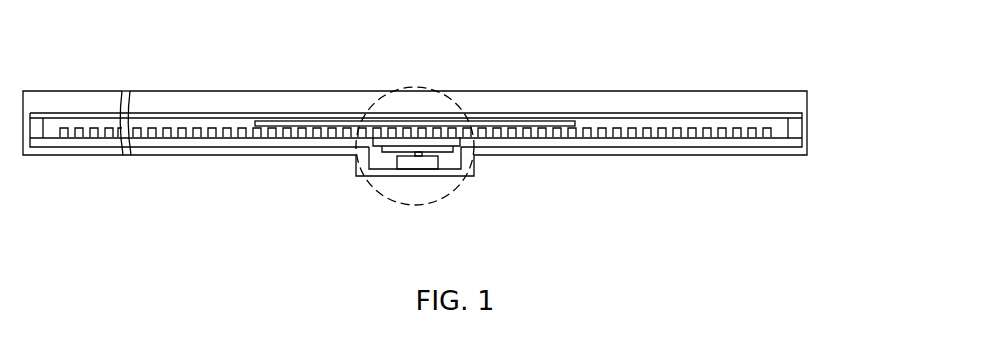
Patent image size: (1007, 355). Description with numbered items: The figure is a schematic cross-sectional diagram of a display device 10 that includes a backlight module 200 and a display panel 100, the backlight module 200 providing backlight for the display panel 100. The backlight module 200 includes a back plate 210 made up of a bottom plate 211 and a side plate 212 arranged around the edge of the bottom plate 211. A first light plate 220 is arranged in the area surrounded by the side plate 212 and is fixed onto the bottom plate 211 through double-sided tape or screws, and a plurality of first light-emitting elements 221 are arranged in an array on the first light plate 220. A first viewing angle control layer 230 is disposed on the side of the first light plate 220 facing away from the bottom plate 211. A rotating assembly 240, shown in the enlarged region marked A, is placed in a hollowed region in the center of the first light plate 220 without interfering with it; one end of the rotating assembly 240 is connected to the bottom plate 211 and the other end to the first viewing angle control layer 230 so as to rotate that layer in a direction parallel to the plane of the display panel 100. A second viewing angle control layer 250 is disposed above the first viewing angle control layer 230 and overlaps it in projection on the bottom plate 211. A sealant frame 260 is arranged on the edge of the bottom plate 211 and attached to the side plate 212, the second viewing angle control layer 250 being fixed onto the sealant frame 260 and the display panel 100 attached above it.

The display device 10 is at (77, 57).
The display panel 100 is at (248, 100).
The backlight module 200 is at (870, 226).
The back plate 210 is at (806, 197).
The bottom plate 211 is at (794, 149).
The side plate 212 is at (803, 143).
The first light plate 220 is at (707, 141).
The first light-emitting elements 221 is at (625, 132).
The first viewing angle control layer 230 is at (545, 120).
The rotating assembly 240 is at (427, 162).
The second viewing angle control layer 250 is at (722, 114).
The sealant frame 260 is at (797, 124).
The enlarged region A is at (424, 86).